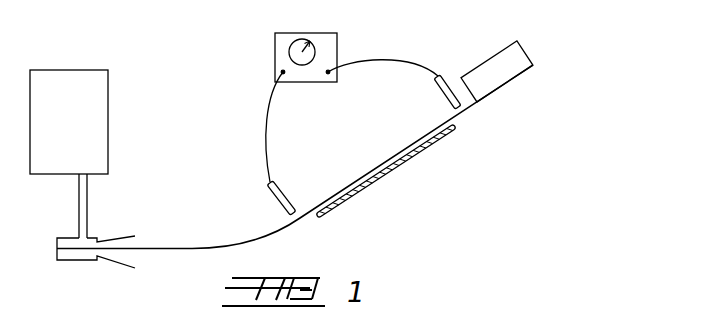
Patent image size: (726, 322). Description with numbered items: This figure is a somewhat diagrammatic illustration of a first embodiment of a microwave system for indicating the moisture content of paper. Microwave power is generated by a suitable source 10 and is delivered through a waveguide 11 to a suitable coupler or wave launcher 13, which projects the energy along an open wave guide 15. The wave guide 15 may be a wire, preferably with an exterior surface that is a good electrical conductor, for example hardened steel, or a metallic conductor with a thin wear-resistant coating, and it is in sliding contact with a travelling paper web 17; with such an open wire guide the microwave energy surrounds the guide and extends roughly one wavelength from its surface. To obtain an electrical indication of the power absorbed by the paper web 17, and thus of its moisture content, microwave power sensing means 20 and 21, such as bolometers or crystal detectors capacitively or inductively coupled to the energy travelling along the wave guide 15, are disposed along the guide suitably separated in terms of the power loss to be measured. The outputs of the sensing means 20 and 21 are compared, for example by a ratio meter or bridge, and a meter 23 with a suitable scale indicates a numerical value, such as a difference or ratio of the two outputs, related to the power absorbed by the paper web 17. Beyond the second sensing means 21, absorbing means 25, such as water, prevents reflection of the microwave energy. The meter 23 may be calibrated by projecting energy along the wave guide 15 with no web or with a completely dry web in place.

The source 10 is at (108, 95).
The waveguide 11 is at (87, 213).
The coupler or wave launcher 13 is at (108, 261).
The open wave guide 15 is at (280, 229).
The paper web 17 is at (385, 169).
The microwave power sensing means 20 is at (284, 190).
The microwave power sensing means 21 is at (450, 82).
The meter 23 is at (330, 38).
The absorbing means 25 is at (514, 48).